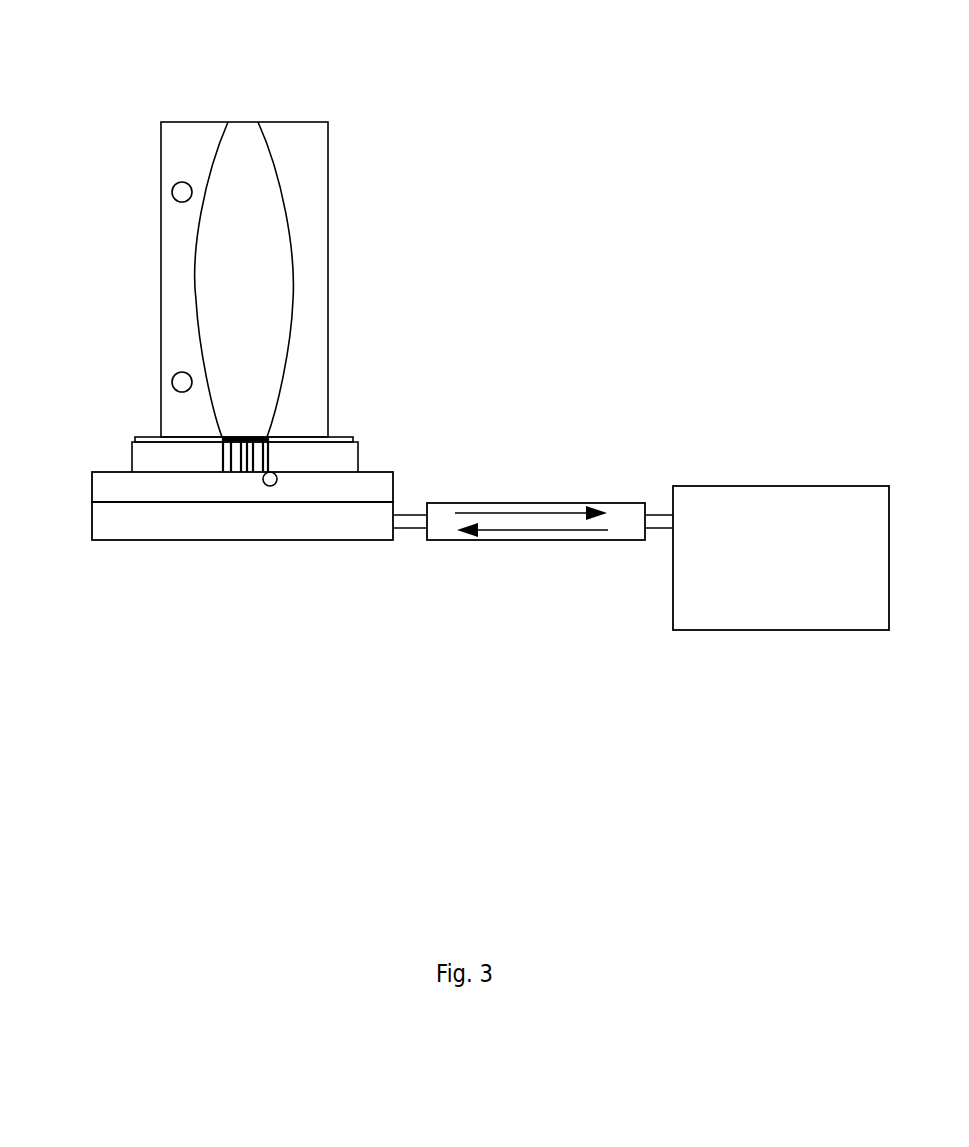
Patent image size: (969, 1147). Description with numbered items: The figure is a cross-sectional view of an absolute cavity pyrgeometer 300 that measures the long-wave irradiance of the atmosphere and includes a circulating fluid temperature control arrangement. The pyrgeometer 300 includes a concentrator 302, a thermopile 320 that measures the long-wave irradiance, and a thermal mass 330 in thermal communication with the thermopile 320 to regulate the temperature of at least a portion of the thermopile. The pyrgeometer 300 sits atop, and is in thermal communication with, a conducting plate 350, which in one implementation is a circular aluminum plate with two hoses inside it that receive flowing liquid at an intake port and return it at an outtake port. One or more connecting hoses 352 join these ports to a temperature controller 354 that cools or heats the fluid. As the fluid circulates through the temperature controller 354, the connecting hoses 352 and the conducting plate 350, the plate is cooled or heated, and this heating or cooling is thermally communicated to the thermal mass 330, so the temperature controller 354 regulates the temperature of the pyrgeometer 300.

The absolute cavity pyrgeometer 300 is at (199, 68).
The concentrator 302 is at (320, 173).
The thermopile 320 is at (243, 448).
The thermal mass 330 is at (130, 485).
The conducting plate 350 is at (267, 540).
The connecting hoses 352 is at (562, 540).
The temperature controller 354 is at (790, 486).